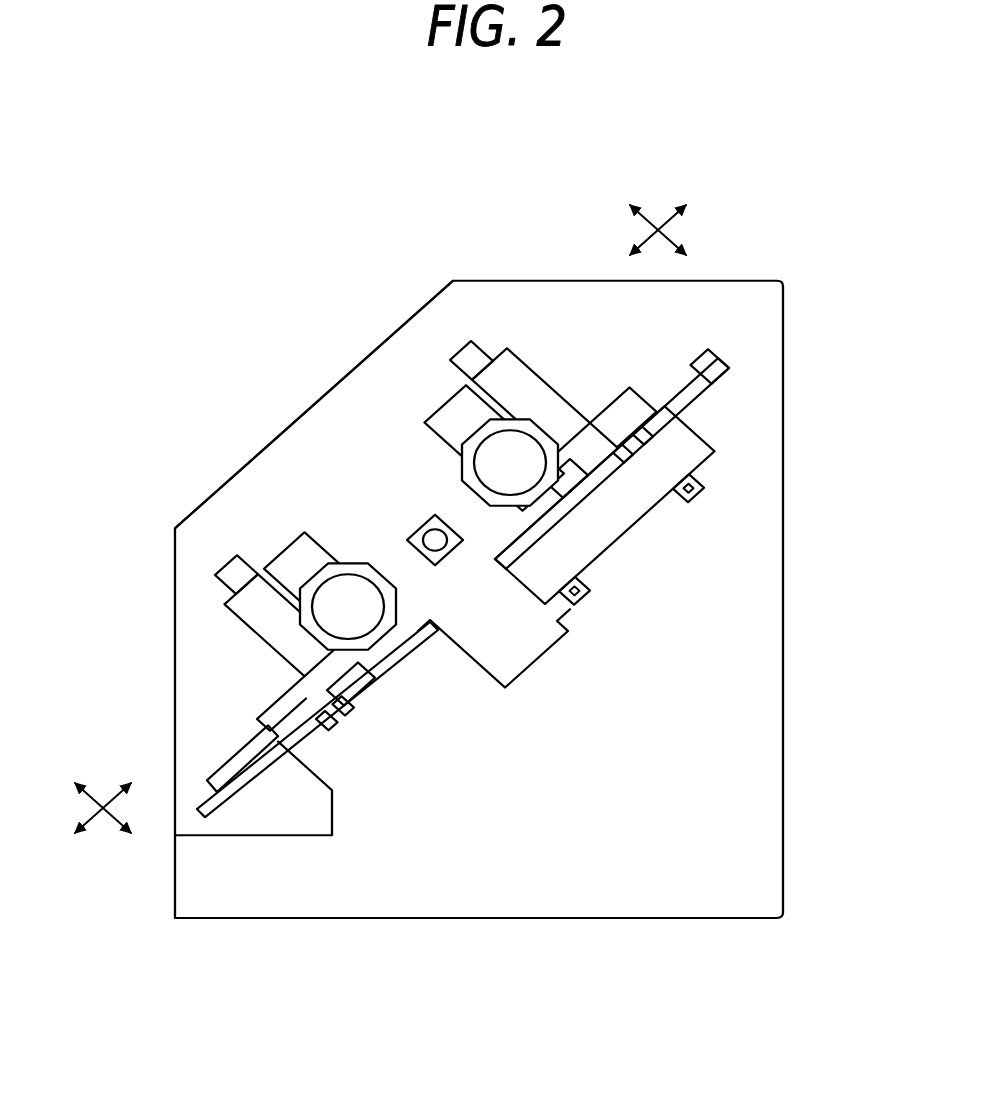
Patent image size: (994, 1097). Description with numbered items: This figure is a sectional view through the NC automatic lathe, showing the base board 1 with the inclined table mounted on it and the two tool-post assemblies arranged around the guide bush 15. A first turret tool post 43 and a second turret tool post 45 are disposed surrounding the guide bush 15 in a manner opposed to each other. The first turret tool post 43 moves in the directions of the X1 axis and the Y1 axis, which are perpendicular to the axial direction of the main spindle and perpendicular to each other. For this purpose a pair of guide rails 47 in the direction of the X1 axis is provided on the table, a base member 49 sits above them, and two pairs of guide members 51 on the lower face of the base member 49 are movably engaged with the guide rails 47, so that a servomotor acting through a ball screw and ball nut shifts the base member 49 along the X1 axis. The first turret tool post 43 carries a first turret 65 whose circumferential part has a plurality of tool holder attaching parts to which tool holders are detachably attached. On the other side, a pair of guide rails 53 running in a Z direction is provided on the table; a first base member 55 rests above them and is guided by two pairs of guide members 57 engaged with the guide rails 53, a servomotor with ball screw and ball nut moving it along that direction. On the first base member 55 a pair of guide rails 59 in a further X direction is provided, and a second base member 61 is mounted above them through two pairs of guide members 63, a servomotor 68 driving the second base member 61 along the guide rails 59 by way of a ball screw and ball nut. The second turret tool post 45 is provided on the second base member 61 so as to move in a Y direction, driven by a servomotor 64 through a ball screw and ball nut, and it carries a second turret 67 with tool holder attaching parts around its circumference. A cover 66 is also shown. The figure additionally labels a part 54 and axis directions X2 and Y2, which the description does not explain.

The base board 1 is at (785, 778).
The guide bush 15 is at (433, 520).
The first turret tool post 43 is at (352, 565).
The second turret tool post 45 is at (522, 423).
The guide rails in the direction of the X1 axis 47 is at (343, 712).
The base member 49 is at (263, 637).
The guide members in the direction of the X1 axis 51 is at (360, 685).
The guide rails in the direction of the Z3 axis 53 is at (700, 495).
The first slider tab 54 is at (232, 568).
The first base member 55 is at (693, 473).
The guide members in the direction of the Z3 axis 57 is at (697, 490).
The guide rails in the direction of the X3 axis 59 is at (630, 457).
The second base member 61 is at (627, 410).
The guide members in the direction of the X3 axis 63 is at (670, 422).
The servomotor 64 is at (466, 355).
The first turret 65 is at (362, 590).
The cover 66 is at (245, 467).
The second turret 67 is at (533, 462).
The servomotor 68 is at (716, 350).
The X1 axis X1 is at (106, 802).
The Y1 axis Y1 is at (102, 815).
The X2 axis direction X2 is at (662, 222).
The Y2 axis direction Y2 is at (672, 236).